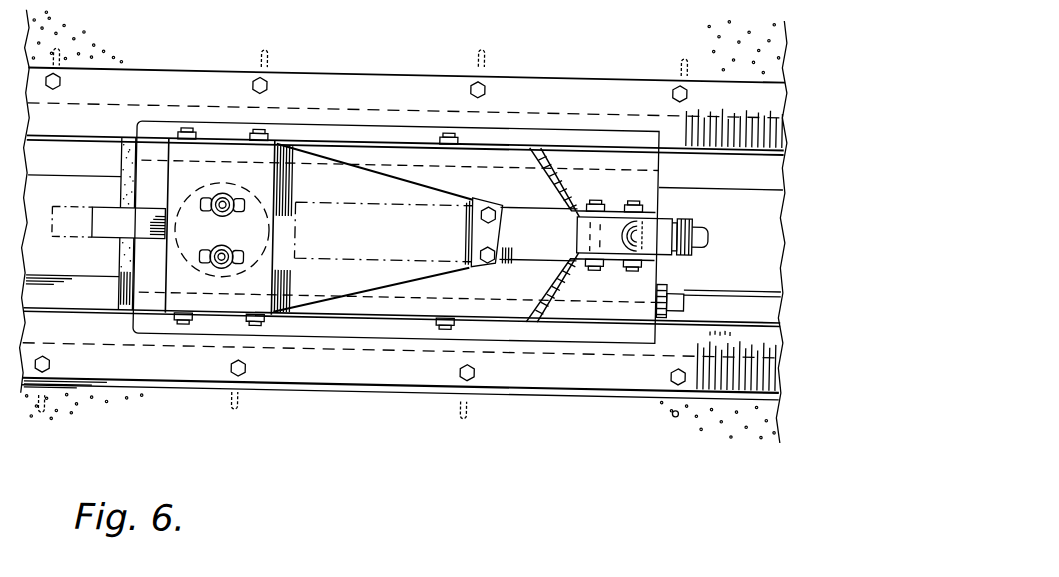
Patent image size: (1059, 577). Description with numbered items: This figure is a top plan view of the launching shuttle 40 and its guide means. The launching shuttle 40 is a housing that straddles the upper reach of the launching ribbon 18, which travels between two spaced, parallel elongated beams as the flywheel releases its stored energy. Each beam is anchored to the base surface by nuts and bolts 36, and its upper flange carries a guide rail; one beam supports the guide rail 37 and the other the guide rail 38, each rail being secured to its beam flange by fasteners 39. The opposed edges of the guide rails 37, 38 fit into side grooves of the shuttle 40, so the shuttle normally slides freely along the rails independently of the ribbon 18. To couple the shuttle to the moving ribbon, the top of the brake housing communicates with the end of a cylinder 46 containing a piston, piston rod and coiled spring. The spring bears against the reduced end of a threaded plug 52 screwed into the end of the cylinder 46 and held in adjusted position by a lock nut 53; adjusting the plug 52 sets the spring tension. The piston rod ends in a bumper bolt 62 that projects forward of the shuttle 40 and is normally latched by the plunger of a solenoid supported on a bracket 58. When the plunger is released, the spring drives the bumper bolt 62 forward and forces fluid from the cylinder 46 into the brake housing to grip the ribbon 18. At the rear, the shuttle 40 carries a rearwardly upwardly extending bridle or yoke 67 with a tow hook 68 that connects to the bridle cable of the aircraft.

The launching ribbon 18 is at (763, 212).
The bolts 36 is at (476, 57).
The guide rail 37 is at (122, 82).
The guide rail 38 is at (113, 338).
The fasteners 39 is at (58, 78).
The launching shuttle 40 is at (485, 173).
The cylinder 46 is at (310, 210).
The threaded plug 52 is at (685, 246).
The lock nut 53 is at (667, 206).
The bracket 58 is at (352, 266).
The bumper bolt 62 is at (75, 228).
The bridle or yoke 67 is at (547, 155).
The tow hook 68 is at (617, 213).